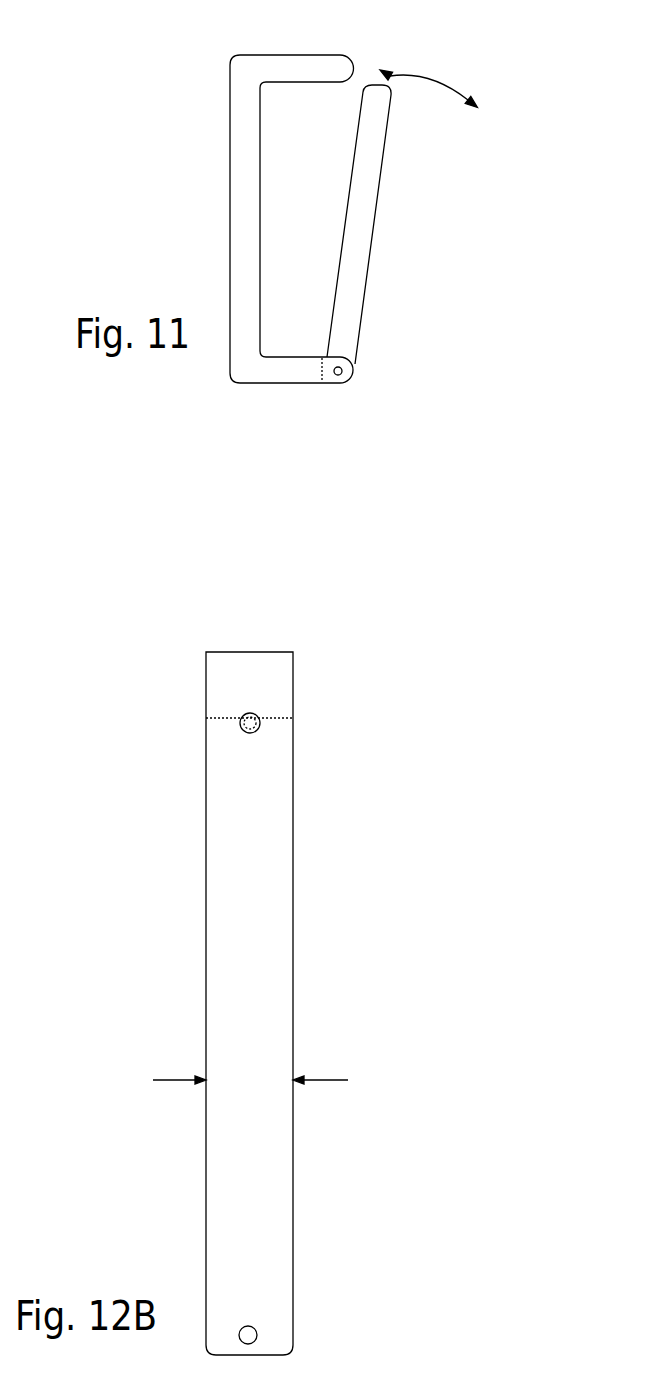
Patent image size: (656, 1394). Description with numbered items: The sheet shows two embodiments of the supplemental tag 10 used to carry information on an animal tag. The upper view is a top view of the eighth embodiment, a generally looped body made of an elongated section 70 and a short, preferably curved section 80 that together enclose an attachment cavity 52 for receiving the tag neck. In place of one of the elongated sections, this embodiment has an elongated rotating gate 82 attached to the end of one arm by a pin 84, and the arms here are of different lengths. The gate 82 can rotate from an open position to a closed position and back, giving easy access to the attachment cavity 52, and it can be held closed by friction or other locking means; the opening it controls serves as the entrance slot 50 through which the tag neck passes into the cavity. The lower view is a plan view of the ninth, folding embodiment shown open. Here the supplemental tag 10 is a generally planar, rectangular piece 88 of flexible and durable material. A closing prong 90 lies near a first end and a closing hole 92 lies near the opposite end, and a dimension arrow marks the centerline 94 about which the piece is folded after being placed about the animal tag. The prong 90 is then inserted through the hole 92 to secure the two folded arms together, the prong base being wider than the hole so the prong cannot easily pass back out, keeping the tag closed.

In FIG. 11, the supplemental tag 10 is at (212, 44).
In FIG. 12B, the supplemental tag 10 is at (186, 638).
In FIG. 11, the entrance slot 50 is at (352, 85).
In FIG. 11, the attachment cavity 52 is at (283, 293).
In FIG. 11, the elongated section 70 is at (230, 157).
In FIG. 11, the curved section 80 is at (313, 55).
In FIG. 11, the rotating gate 82 is at (373, 242).
In FIG. 11, the pin 84 is at (345, 375).
In FIG. 12B, the rectangular piece 88 is at (293, 942).
In FIG. 12B, the closing prong 90 is at (258, 730).
In FIG. 12B, the closing hole 92 is at (257, 1328).
In FIG. 12B, the centerline 94 is at (272, 1080).